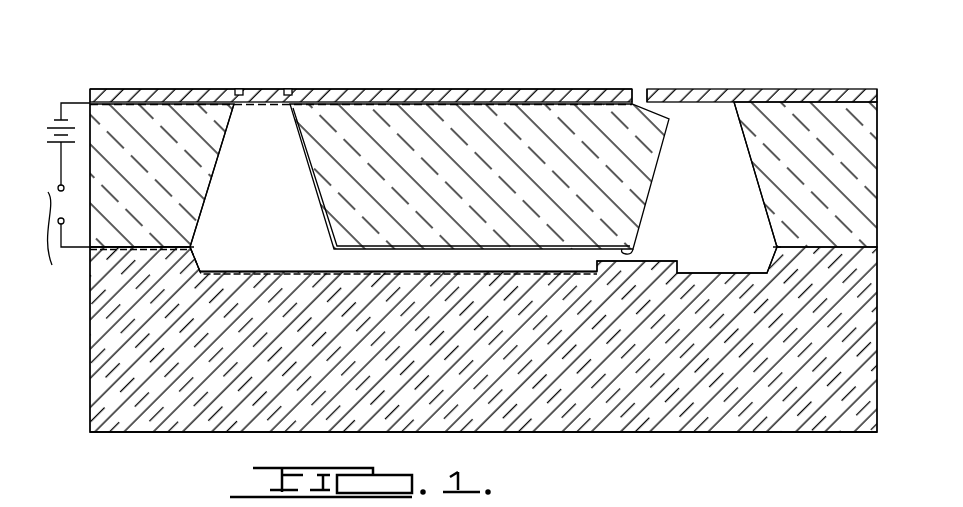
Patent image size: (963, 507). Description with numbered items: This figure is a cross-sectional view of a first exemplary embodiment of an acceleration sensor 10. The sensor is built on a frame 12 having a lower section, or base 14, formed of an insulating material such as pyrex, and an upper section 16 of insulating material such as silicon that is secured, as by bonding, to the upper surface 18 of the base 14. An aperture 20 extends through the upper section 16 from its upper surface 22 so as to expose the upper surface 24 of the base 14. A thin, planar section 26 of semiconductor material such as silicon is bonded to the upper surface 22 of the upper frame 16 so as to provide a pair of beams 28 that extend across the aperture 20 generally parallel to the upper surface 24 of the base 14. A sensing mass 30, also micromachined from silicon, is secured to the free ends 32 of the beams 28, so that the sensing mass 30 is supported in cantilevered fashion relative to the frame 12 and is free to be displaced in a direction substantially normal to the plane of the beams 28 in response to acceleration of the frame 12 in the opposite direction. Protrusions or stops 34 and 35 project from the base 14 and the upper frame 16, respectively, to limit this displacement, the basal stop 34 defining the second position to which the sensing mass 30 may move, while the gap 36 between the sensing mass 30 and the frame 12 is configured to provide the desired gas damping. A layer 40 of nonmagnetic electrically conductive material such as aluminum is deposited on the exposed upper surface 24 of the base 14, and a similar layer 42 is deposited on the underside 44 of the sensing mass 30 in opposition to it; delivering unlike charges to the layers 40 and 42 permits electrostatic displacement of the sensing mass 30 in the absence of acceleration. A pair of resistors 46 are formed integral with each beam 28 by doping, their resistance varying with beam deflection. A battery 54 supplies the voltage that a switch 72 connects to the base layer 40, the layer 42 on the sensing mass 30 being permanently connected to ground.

The acceleration sensor 10 is at (798, 448).
The frame 12 is at (89, 366).
The base 14 is at (88, 420).
The upper section 16 is at (219, 155).
The upper surface of the base 18 is at (186, 244).
The aperture 20 is at (757, 180).
The upper surface of the upper section 22 is at (805, 102).
The upper surface of the base 24 is at (735, 273).
The planar section 26 is at (413, 88).
The beams 28 is at (257, 89).
The sensing mass 30 is at (664, 149).
The free ends of the beams 32 is at (583, 88).
The basal stop 34 is at (666, 261).
The stop 35 is at (704, 88).
The gap 36 is at (345, 260).
The conductive layer 40 is at (248, 271).
The conductive layer 42 is at (481, 257).
The underside of the sensing mass 44 is at (634, 247).
The resistors 46 is at (238, 89).
The battery 54 is at (57, 119).
The switch 72 is at (64, 235).